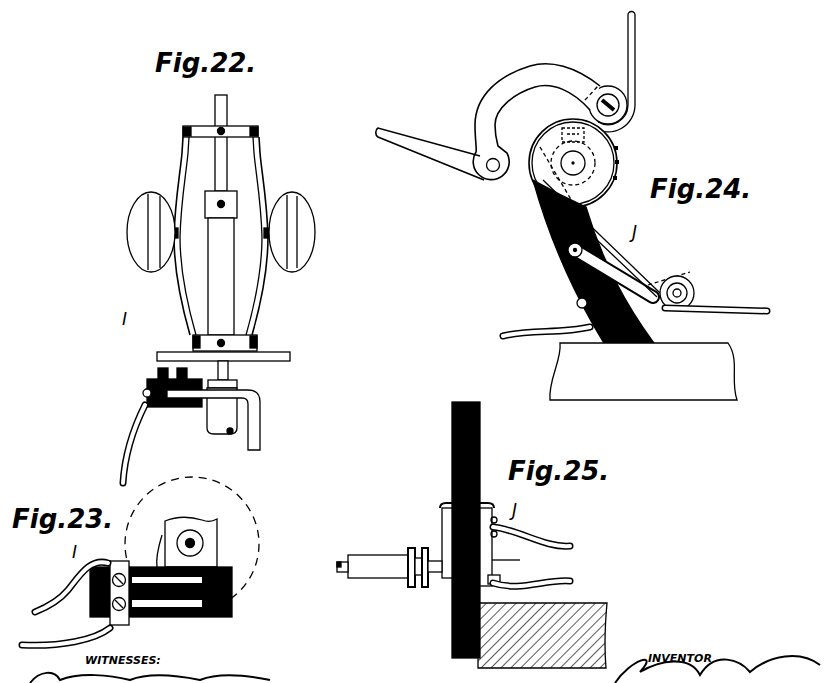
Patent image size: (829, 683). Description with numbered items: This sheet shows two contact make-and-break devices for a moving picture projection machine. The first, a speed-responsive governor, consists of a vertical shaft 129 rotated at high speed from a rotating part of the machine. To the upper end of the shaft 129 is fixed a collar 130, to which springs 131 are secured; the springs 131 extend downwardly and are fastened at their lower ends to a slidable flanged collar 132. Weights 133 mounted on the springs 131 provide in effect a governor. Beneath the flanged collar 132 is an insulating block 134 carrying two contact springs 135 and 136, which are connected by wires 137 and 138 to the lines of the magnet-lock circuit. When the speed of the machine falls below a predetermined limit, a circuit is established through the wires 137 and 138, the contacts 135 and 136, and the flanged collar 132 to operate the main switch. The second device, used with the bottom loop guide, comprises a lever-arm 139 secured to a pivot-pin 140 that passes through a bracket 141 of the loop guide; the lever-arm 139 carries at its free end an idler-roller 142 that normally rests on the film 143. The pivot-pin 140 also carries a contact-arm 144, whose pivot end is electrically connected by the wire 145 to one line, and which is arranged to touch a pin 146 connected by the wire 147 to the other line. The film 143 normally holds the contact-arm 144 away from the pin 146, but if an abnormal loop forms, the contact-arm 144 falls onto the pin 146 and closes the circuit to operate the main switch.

In FIG. 22, the vertical shaft 129 is at (228, 178).
In FIG. 23, the vertical shaft 129 is at (194, 543).
In FIG. 22, the collar 130 is at (240, 129).
In FIG. 22, the springs 131 is at (180, 158).
In FIG. 22, the slidable flanged collar 132 is at (275, 355).
In FIG. 22, the weights 133 is at (128, 252).
In FIG. 22, the insulating block 134 is at (180, 410).
In FIG. 23, the insulating block 134 is at (232, 605).
In FIG. 22, the contact spring 135 is at (156, 368).
In FIG. 23, the contact spring 135 is at (152, 617).
In FIG. 22, the contact spring 136 is at (225, 372).
In FIG. 23, the contact spring 136 is at (159, 545).
In FIG. 22, the wire 137 is at (120, 425).
In FIG. 23, the wire 137 is at (75, 637).
In FIG. 23, the wire 138 is at (70, 572).
In FIG. 24, the lever-arm 139 is at (635, 265).
In FIG. 25, the lever-arm 139 is at (442, 540).
In FIG. 24, the pivot-pin 140 is at (566, 258).
In FIG. 25, the pivot-pin 140 is at (442, 506).
In FIG. 24, the bracket 141 is at (546, 232).
In FIG. 25, the bracket 141 is at (452, 610).
In FIG. 24, the idler-roller 142 is at (695, 292).
In FIG. 25, the idler-roller 142 is at (378, 578).
In FIG. 24, the film 143 is at (745, 312).
In FIG. 24, the contact-arm 144 is at (686, 273).
In FIG. 25, the contact-arm 144 is at (516, 566).
In FIG. 25, the wire 145 is at (528, 546).
In FIG. 24, the pin 146 is at (577, 302).
In FIG. 25, the pin 146 is at (500, 578).
In FIG. 24, the wire 147 is at (540, 340).
In FIG. 25, the wire 147 is at (560, 588).